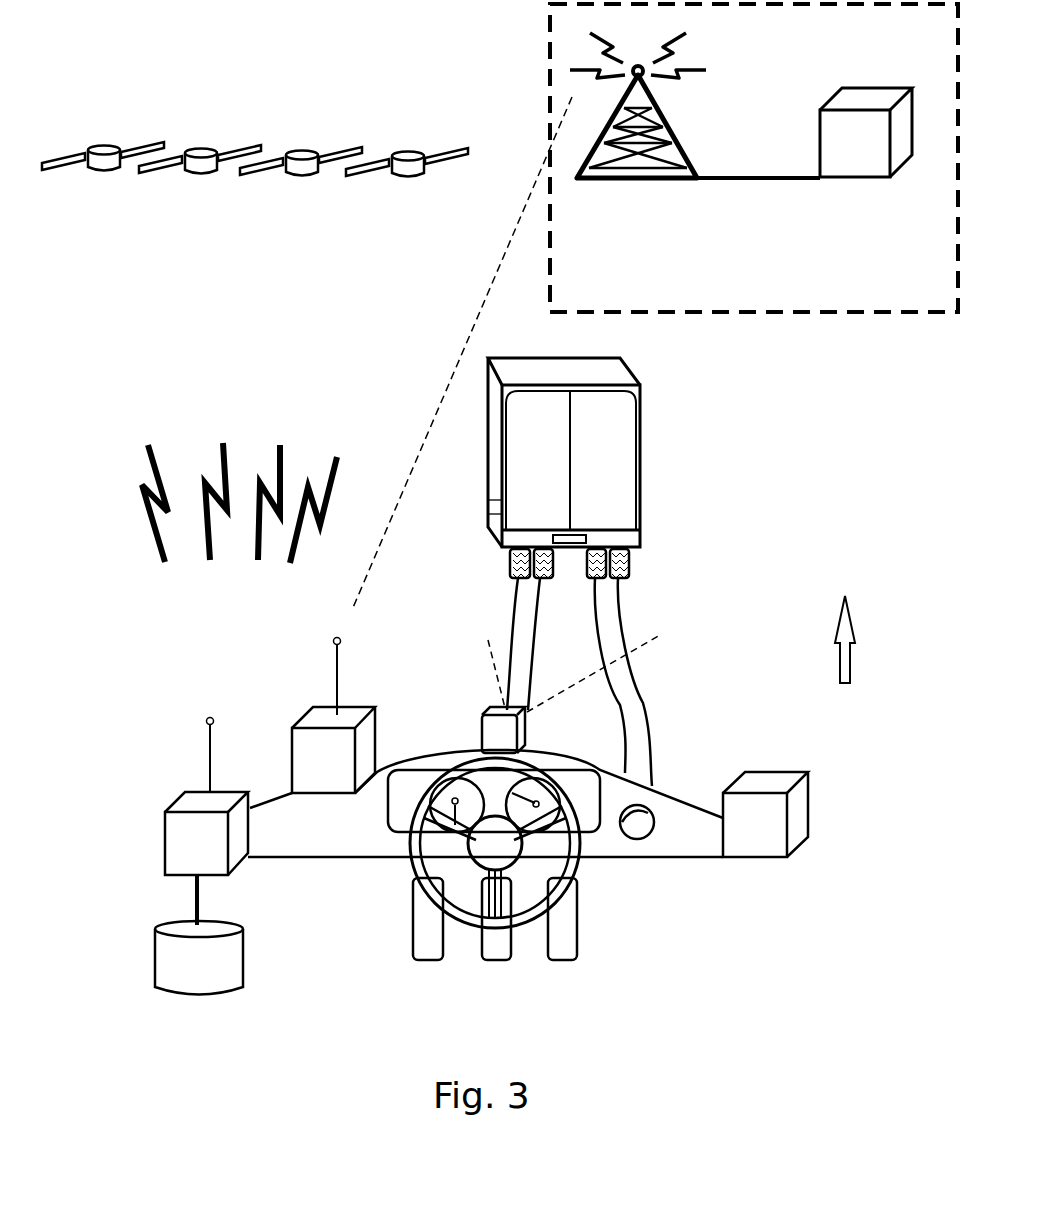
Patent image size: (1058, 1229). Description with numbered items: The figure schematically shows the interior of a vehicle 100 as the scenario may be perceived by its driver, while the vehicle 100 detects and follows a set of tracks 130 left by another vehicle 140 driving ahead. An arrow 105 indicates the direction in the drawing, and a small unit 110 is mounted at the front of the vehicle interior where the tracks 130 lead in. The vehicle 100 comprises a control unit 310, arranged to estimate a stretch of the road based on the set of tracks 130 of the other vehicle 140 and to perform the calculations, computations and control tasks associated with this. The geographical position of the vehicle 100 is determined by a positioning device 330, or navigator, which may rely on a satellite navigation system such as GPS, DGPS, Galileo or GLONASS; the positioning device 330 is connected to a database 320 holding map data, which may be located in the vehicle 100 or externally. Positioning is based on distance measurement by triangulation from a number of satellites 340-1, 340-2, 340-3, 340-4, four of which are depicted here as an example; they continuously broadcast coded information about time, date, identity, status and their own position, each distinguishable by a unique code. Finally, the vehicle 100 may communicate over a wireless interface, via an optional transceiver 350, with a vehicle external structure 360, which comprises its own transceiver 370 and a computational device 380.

The vehicle 100 is at (293, 837).
The travel direction arrow 105 is at (871, 639).
The sensor unit 110 is at (525, 727).
The set of tracks 130 is at (620, 620).
The other vehicle 140 is at (607, 478).
The control unit 310 is at (736, 838).
The database 320 is at (180, 978).
The positioning device 330 is at (178, 858).
The satellite 340-1 is at (63, 153).
The satellite 340-2 is at (170, 160).
The satellite 340-3 is at (270, 167).
The satellite 340-4 is at (380, 163).
The transceiver 350 is at (355, 717).
The vehicle external structure 360 is at (852, 313).
The transceiver 370 is at (600, 180).
The computational device 380 is at (838, 156).